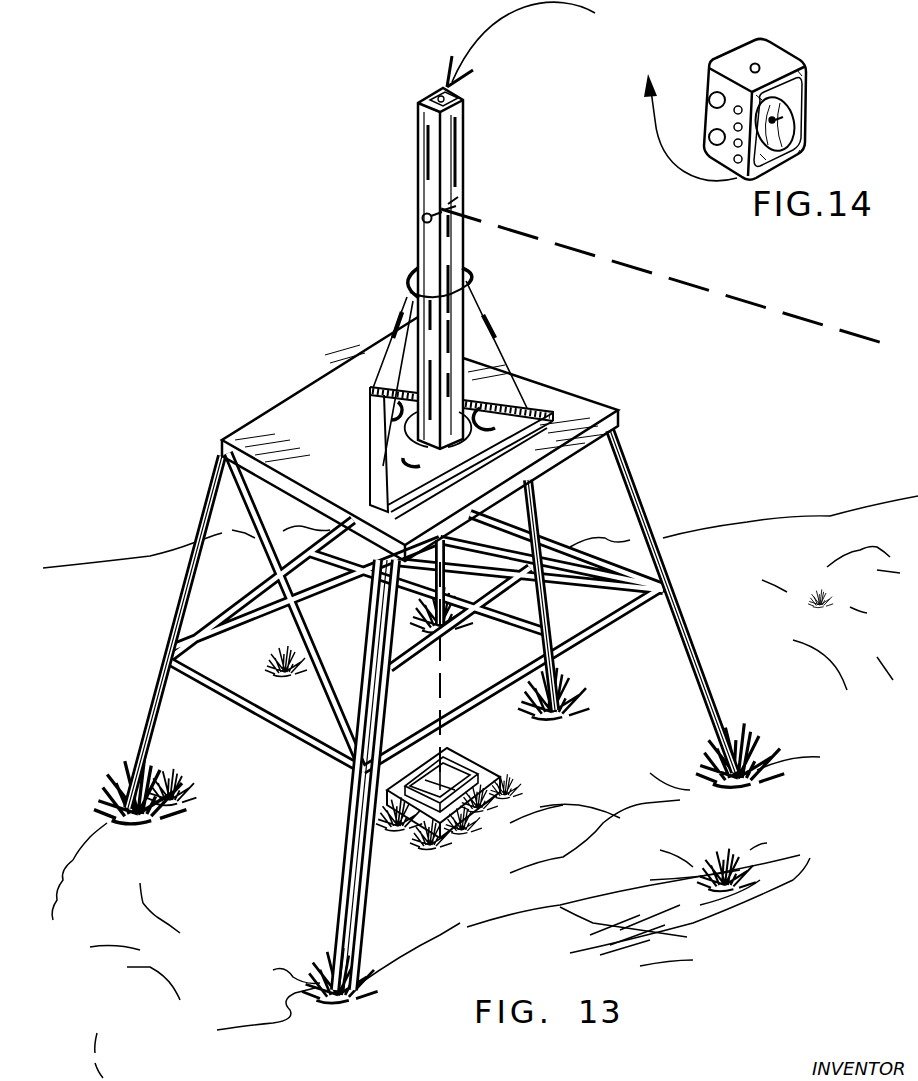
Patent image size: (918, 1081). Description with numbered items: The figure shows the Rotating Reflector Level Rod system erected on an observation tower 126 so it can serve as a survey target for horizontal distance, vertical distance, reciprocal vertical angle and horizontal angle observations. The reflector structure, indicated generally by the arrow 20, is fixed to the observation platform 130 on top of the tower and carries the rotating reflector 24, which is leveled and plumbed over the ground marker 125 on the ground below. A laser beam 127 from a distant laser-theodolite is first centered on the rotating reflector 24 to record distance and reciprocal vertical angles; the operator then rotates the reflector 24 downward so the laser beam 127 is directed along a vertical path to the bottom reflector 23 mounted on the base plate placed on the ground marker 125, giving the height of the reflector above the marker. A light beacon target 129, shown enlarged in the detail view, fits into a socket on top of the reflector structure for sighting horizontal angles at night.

In FIG. 13, the mast assembly 20 is at (397, 197).
In FIG. 13, the light beacon target 129 is at (458, 97).
In FIG. 14, the light beacon target 129 is at (808, 108).
In FIG. 13, the rotating reflector 24 is at (457, 200).
In FIG. 13, the observation platform 130 is at (530, 400).
In FIG. 13, the observation tower 126 is at (650, 535).
In FIG. 13, the laser beam 127 is at (687, 282).
In FIG. 13, the bottom reflector 23 is at (463, 773).
In FIG. 13, the ground marker 125 is at (493, 788).